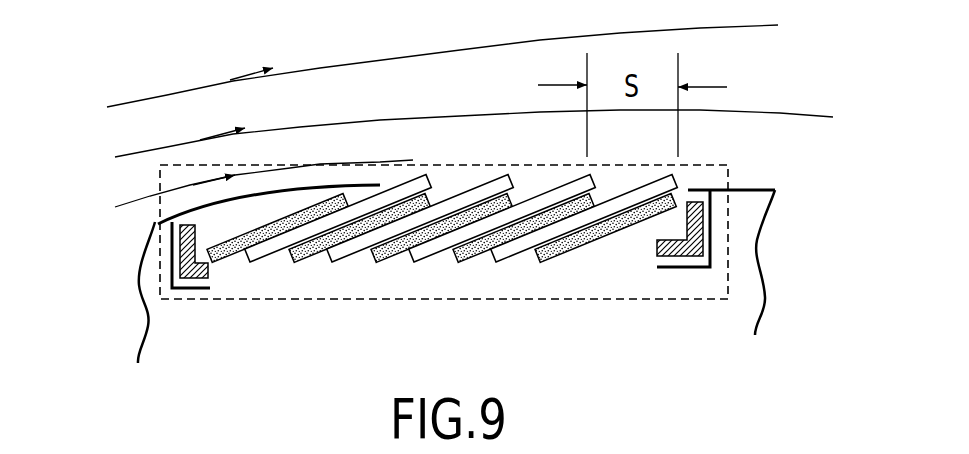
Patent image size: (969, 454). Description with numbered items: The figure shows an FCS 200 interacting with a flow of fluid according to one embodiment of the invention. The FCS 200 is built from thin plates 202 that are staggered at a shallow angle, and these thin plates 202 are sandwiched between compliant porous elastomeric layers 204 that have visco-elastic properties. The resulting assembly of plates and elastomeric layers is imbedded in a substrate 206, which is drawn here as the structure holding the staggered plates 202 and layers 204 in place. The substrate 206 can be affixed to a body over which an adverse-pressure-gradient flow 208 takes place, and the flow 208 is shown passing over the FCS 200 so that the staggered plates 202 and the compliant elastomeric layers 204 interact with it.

The FCS 200 is at (647, 302).
The thin plates 202 is at (350, 262).
The compliant porous elastomeric layers 204 is at (545, 258).
The substrate 206 is at (678, 225).
The adverse-pressure-gradient flow 208 is at (115, 207).